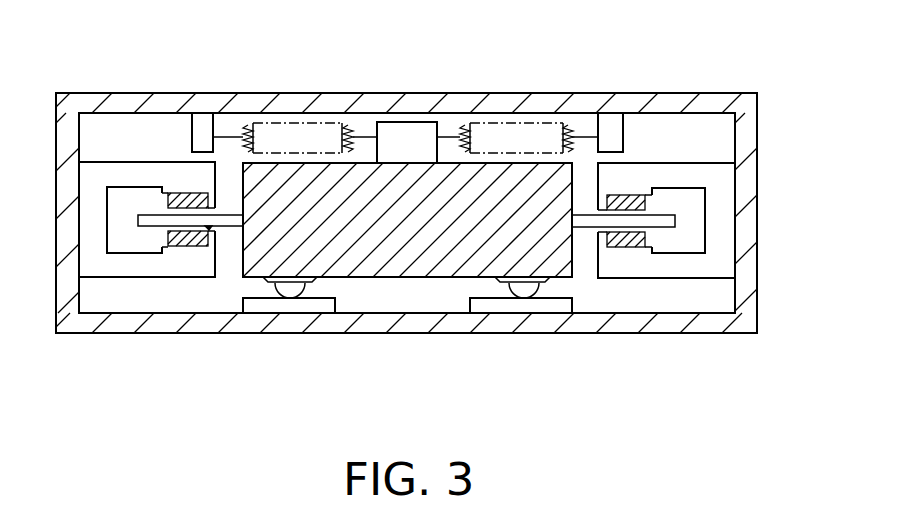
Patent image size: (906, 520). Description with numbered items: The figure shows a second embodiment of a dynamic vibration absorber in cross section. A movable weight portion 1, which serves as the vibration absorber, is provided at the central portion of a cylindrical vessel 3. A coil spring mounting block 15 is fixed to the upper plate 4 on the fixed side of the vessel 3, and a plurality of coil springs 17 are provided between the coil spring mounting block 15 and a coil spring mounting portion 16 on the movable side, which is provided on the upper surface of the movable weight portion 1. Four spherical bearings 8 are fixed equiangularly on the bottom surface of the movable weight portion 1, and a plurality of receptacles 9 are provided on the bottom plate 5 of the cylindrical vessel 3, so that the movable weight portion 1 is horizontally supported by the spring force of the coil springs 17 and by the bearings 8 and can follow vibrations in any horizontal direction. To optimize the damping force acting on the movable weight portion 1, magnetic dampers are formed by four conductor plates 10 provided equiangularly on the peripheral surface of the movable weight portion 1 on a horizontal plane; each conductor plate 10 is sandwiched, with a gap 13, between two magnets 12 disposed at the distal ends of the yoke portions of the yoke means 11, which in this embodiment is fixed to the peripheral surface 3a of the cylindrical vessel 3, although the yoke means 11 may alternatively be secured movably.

The movable weight portion 1 is at (402, 257).
The cylindrical vessel 3 is at (444, 214).
The peripheral surface 3a is at (750, 217).
The upper plate 4 is at (453, 98).
The bottom plate 5 is at (667, 328).
The bearings 8 is at (280, 288).
The receptacles 9 is at (310, 308).
The conductor plates 10 is at (148, 217).
The yoke means 11 is at (120, 270).
The magnets 12 is at (183, 195).
The gap 13 is at (208, 227).
The coil spring mounting block 15 is at (205, 120).
The coil spring mounting portion 16 is at (398, 128).
The coil springs 17 is at (301, 123).